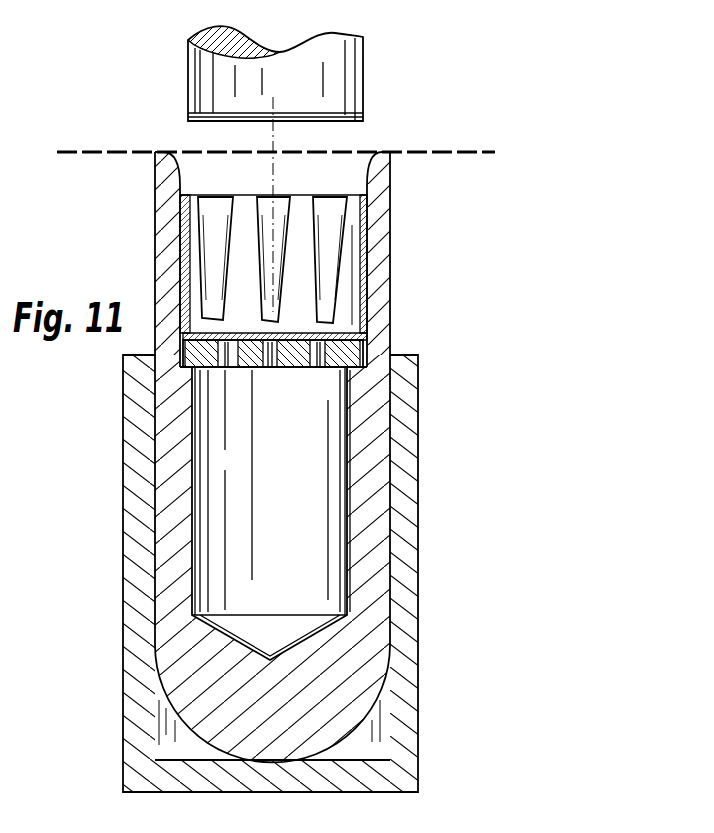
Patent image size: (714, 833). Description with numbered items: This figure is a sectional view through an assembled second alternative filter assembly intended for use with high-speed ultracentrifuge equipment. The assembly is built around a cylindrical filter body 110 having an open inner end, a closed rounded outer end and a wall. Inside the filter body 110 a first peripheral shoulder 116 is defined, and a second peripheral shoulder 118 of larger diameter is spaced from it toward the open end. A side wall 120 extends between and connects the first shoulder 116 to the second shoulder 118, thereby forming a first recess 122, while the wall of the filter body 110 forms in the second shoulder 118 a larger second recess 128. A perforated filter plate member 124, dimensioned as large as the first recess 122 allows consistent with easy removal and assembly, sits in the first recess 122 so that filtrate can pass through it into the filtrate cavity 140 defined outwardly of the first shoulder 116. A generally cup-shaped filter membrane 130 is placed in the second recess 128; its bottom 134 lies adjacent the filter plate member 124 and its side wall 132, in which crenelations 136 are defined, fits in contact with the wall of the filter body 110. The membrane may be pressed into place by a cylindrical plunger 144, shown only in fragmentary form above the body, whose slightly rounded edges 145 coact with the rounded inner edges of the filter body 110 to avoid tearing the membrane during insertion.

The filter body 110 is at (402, 226).
The first peripheral shoulder 116 is at (392, 353).
The second peripheral shoulder 118 is at (357, 368).
The side wall 120 is at (183, 364).
The first recess 122 is at (341, 372).
The filter plate member 124 is at (222, 368).
The second recess 128 is at (364, 318).
The filter membrane 130 is at (332, 203).
The side wall of filter membrane 132 is at (200, 218).
The bottom of filter membrane 134 is at (183, 341).
The crenelations 136 is at (162, 152).
The filtrate cavity 140 is at (243, 531).
The plunger 144 is at (356, 77).
The rounded edges 145 is at (190, 119).